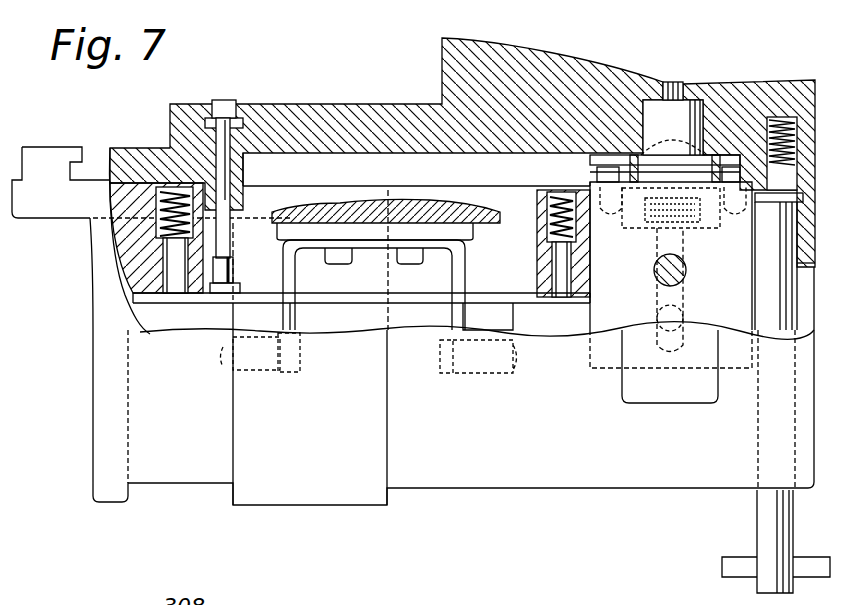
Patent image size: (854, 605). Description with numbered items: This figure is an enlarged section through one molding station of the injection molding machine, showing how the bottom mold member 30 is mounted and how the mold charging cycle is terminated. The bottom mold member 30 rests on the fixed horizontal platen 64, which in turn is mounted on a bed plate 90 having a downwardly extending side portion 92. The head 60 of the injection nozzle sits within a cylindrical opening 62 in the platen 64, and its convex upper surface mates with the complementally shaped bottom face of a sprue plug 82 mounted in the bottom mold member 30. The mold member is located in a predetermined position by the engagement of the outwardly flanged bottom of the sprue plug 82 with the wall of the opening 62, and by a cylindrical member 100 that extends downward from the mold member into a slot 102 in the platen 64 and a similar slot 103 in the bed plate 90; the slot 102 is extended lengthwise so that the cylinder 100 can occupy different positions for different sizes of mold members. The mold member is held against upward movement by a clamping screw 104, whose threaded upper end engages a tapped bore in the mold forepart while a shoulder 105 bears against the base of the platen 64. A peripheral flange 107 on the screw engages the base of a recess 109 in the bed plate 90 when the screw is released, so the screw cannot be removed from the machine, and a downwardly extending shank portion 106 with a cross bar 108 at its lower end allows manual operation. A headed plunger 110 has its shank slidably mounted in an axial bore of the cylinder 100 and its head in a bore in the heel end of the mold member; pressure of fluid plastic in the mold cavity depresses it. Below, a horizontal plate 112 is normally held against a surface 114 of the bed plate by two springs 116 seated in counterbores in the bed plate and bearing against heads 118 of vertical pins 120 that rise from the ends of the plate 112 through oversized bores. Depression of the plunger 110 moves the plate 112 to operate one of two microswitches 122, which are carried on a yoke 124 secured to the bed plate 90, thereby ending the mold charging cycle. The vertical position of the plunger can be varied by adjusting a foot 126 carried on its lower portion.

The bottom mold member 30 is at (533, 50).
The head of the injection nozzle 60 is at (650, 178).
The cylindrical opening 62 is at (625, 160).
The platen 64 is at (470, 183).
The sprue plug 82 is at (682, 108).
The bed plate 90 is at (40, 187).
The side portion of the bed plate 92 is at (93, 447).
The cylindrical member 100 is at (243, 167).
The slot 102 is at (348, 160).
The slot 103 is at (368, 196).
The clamping screw 104 is at (774, 130).
The shoulder 105 is at (780, 188).
The shank portion 106 is at (763, 513).
The peripheral flange 107 is at (798, 212).
The cross bar 108 is at (742, 570).
The recess 109 is at (805, 240).
The headed plunger 110 is at (224, 102).
The horizontal plate 112 is at (180, 300).
The surface of the bed plate 114 is at (140, 333).
The springs 116 is at (165, 198).
The heads of the vertical pins 118 is at (162, 188).
The vertical pins 120 is at (174, 303).
The microswitches 122 is at (273, 327).
The yoke 124 is at (381, 252).
The foot 126 is at (233, 286).